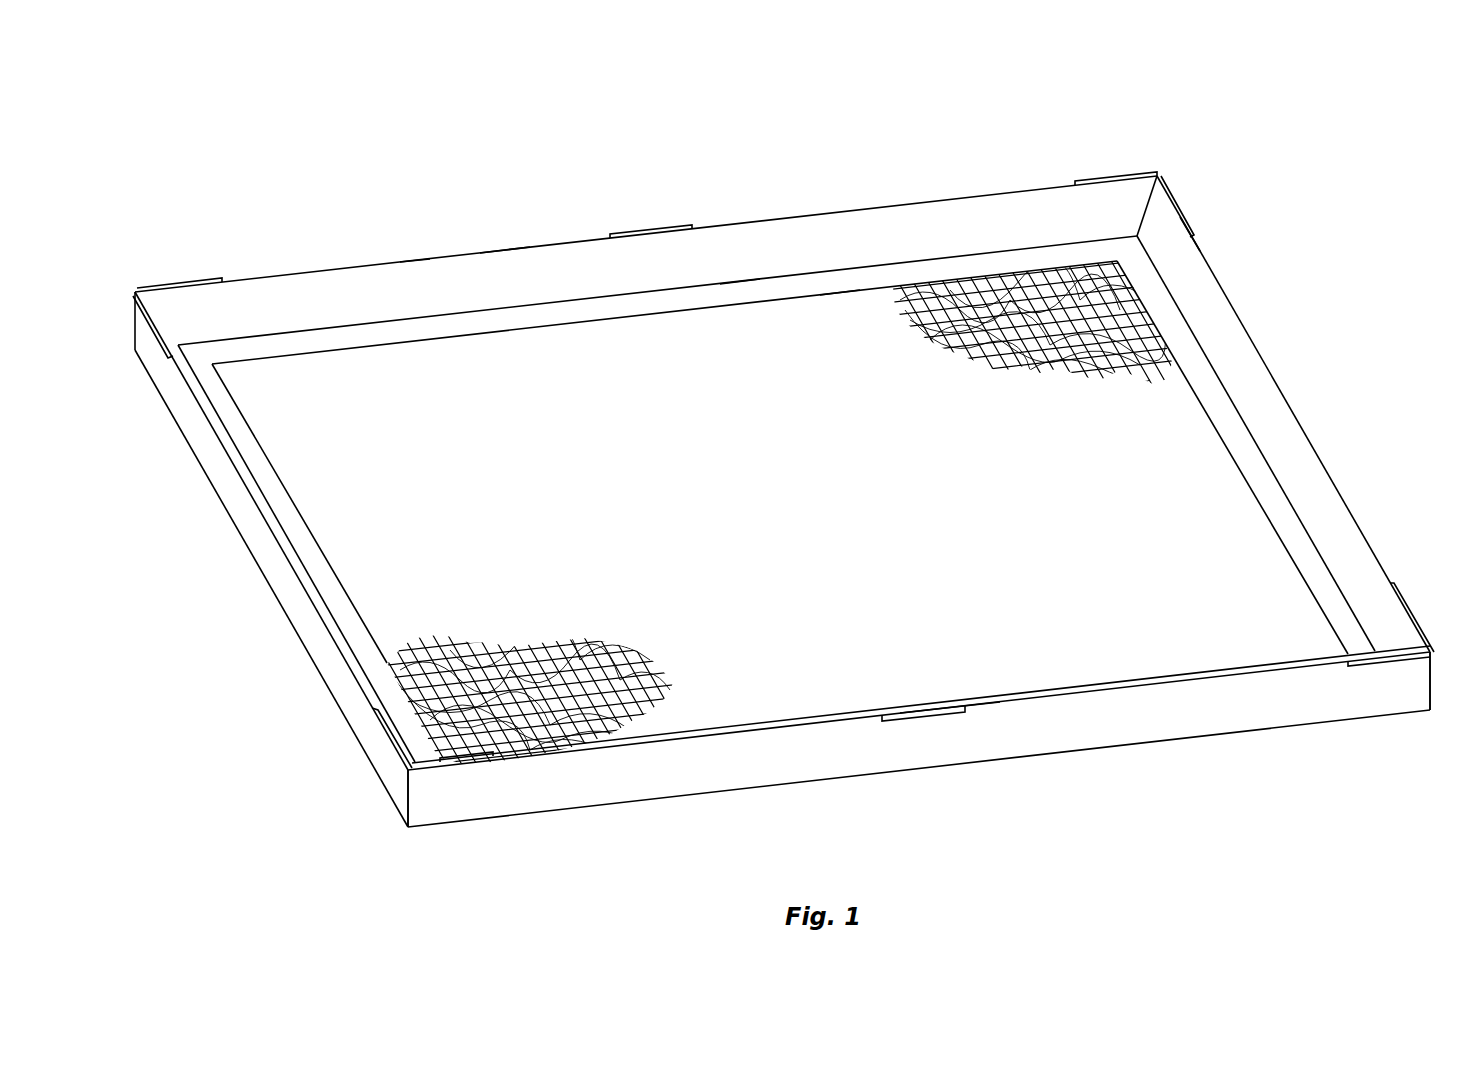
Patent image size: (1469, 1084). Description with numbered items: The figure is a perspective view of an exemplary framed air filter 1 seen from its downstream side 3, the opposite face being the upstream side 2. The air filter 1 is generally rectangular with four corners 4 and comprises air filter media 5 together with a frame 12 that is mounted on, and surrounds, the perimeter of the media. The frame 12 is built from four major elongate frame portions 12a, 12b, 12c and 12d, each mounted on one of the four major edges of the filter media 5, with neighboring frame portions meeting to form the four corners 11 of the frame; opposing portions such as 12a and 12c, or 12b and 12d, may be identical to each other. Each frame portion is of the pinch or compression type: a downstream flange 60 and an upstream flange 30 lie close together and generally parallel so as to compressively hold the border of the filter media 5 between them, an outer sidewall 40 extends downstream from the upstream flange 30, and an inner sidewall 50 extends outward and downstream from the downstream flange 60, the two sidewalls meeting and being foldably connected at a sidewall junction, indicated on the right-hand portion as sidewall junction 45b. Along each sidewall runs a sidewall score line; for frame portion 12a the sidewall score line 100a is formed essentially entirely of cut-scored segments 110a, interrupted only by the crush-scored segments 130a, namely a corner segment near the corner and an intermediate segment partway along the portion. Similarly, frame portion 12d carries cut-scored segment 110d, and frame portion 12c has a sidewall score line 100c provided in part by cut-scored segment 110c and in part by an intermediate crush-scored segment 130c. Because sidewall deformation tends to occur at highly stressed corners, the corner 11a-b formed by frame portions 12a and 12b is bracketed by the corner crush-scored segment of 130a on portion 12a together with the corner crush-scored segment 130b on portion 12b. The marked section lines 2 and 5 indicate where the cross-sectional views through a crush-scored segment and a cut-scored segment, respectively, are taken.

The framed air filter 1 is at (408, 103).
The upstream side 2 is at (910, 685).
The downstream side 3 is at (1256, 249).
The corner 4 is at (135, 292).
The air filter media 5 is at (960, 280).
The corner of frame 11 is at (1431, 652).
The corner of frame formed by frame portions 12a and 12b 11a-b is at (1160, 178).
The frame 12 is at (503, 252).
The frame portion 12a is at (293, 274).
The frame portion 12b is at (1268, 353).
The frame portion 12c is at (690, 742).
The frame portion 12d is at (287, 540).
The upstream flange 30 is at (836, 286).
The outer sidewall 40 is at (732, 255).
The sidewall junction 45b is at (1336, 463).
The inner sidewall 50 is at (415, 282).
The downstream flange 60 is at (1038, 262).
The sidewall score line 100a is at (608, 240).
The sidewall score line 100c is at (780, 728).
The cut-scored segment 110a is at (917, 218).
The cut-scored segment 110c is at (1103, 688).
The cut-scored segment 110d is at (222, 448).
The crush-scored segment 130a is at (660, 234).
The corner crush-scored segment 130b is at (1192, 230).
The intermediate crush-scored segment 130c is at (893, 715).